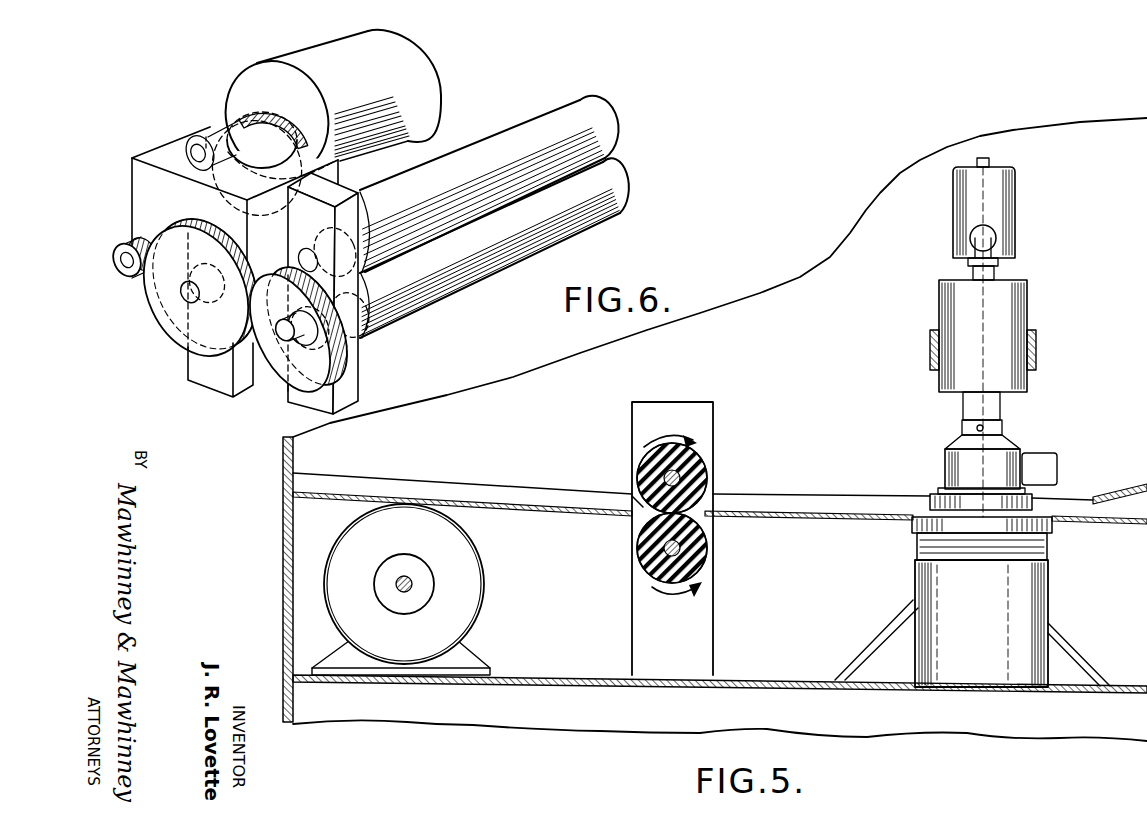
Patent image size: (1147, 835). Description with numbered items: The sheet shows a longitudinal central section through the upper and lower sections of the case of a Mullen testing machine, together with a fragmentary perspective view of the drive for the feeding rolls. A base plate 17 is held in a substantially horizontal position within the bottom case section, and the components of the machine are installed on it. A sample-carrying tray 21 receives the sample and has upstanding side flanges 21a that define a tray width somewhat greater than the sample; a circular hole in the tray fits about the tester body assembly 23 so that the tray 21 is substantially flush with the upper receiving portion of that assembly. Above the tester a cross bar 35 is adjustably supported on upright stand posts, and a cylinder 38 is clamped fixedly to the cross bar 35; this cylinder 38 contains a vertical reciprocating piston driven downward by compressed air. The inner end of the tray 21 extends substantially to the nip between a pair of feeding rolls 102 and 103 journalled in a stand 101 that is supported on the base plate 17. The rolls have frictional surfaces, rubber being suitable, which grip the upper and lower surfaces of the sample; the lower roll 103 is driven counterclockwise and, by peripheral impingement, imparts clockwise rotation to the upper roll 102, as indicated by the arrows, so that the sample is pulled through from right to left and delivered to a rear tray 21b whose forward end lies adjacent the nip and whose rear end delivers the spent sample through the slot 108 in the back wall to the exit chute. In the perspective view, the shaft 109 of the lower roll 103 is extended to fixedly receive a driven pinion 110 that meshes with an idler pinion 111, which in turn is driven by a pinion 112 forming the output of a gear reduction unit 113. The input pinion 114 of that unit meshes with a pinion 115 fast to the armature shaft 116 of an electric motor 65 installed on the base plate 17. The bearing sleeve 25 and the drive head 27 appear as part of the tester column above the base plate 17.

In FIG. 5, the base plate 17 is at (793, 688).
In FIG. 5, the sample-carrying tray 21 is at (830, 518).
In FIG. 5, the upstanding side flanges 21a is at (803, 502).
In FIG. 5, the rear tray 21b is at (536, 512).
In FIG. 5, the tester body assembly 23 is at (1018, 593).
In FIG. 5, the bearing sleeve 25 is at (953, 463).
In FIG. 5, the drive head 27 is at (1017, 214).
In FIG. 5, the cross bar 35 is at (1036, 355).
In FIG. 5, the cylinder 38 is at (1026, 302).
In FIG. 6, the electric motor 65 is at (412, 73).
In FIG. 5, the electric motor 65 is at (473, 588).
In FIG. 5, the stand 101 is at (691, 413).
In FIG. 6, the upper roll 102 is at (603, 131).
In FIG. 5, the upper roll 102 is at (697, 466).
In FIG. 6, the lower roll 103 is at (508, 258).
In FIG. 5, the lower roll 103 is at (656, 570).
In FIG. 5, the slot 108 is at (285, 497).
In FIG. 6, the shaft 109 is at (285, 340).
In FIG. 5, the shaft 109 is at (697, 546).
In FIG. 6, the driven pinion 110 is at (273, 386).
In FIG. 6, the idler pinion 111 is at (168, 342).
In FIG. 6, the pinion 112 is at (123, 276).
In FIG. 6, the gear reduction unit 113 is at (143, 168).
In FIG. 6, the input pinion 114 is at (298, 136).
In FIG. 6, the pinion 115 is at (206, 137).
In FIG. 6, the armature shaft 116 is at (173, 150).